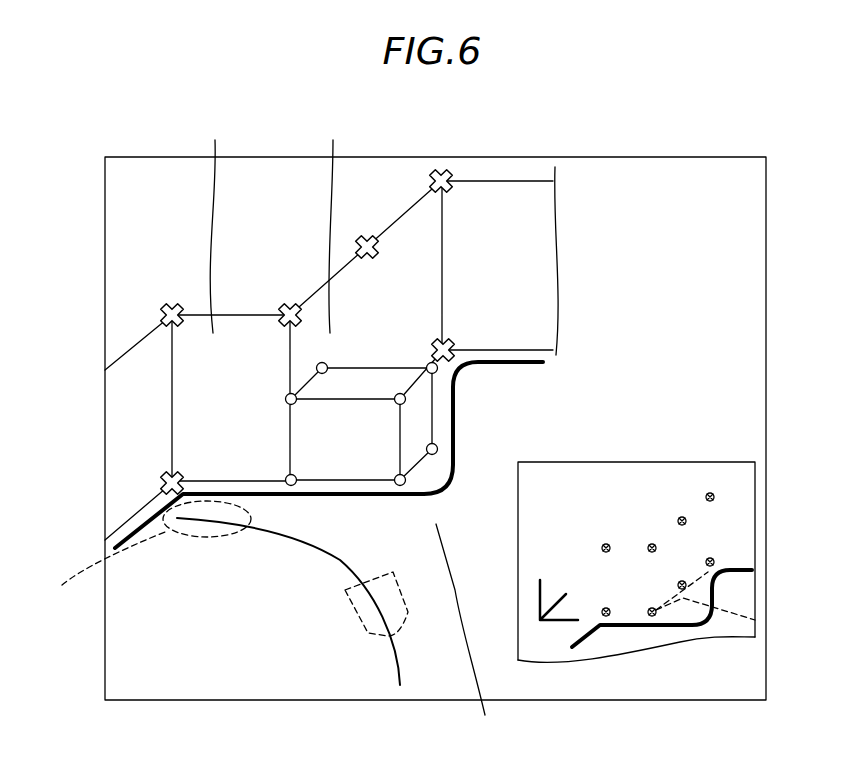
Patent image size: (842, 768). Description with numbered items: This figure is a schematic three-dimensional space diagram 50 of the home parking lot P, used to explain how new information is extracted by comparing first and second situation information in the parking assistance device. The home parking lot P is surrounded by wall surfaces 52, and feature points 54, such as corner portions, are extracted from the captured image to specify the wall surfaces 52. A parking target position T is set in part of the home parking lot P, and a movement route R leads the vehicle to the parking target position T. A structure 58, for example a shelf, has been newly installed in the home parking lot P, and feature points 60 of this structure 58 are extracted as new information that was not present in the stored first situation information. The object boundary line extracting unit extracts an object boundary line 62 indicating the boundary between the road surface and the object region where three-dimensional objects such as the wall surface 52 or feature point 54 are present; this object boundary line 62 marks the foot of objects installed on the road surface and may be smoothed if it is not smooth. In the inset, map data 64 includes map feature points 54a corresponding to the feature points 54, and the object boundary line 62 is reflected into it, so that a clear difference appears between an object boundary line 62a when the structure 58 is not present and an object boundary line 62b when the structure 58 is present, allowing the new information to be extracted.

The three-dimensional space diagram 50 is at (698, 158).
The wall surface 52 is at (538, 212).
The feature point 54 is at (288, 303).
The structure 58 is at (417, 423).
The feature point of the structure 60 is at (399, 394).
The object boundary line 62 is at (545, 362).
The map data 64 is at (703, 461).
The map feature point 54a is at (714, 559).
The object boundary line when the structure is not present 62a is at (755, 620).
The object boundary line when the structure is present 62b is at (714, 583).
The parking target position T is at (146, 548).
The movement route R is at (318, 542).
The home parking lot P is at (463, 634).